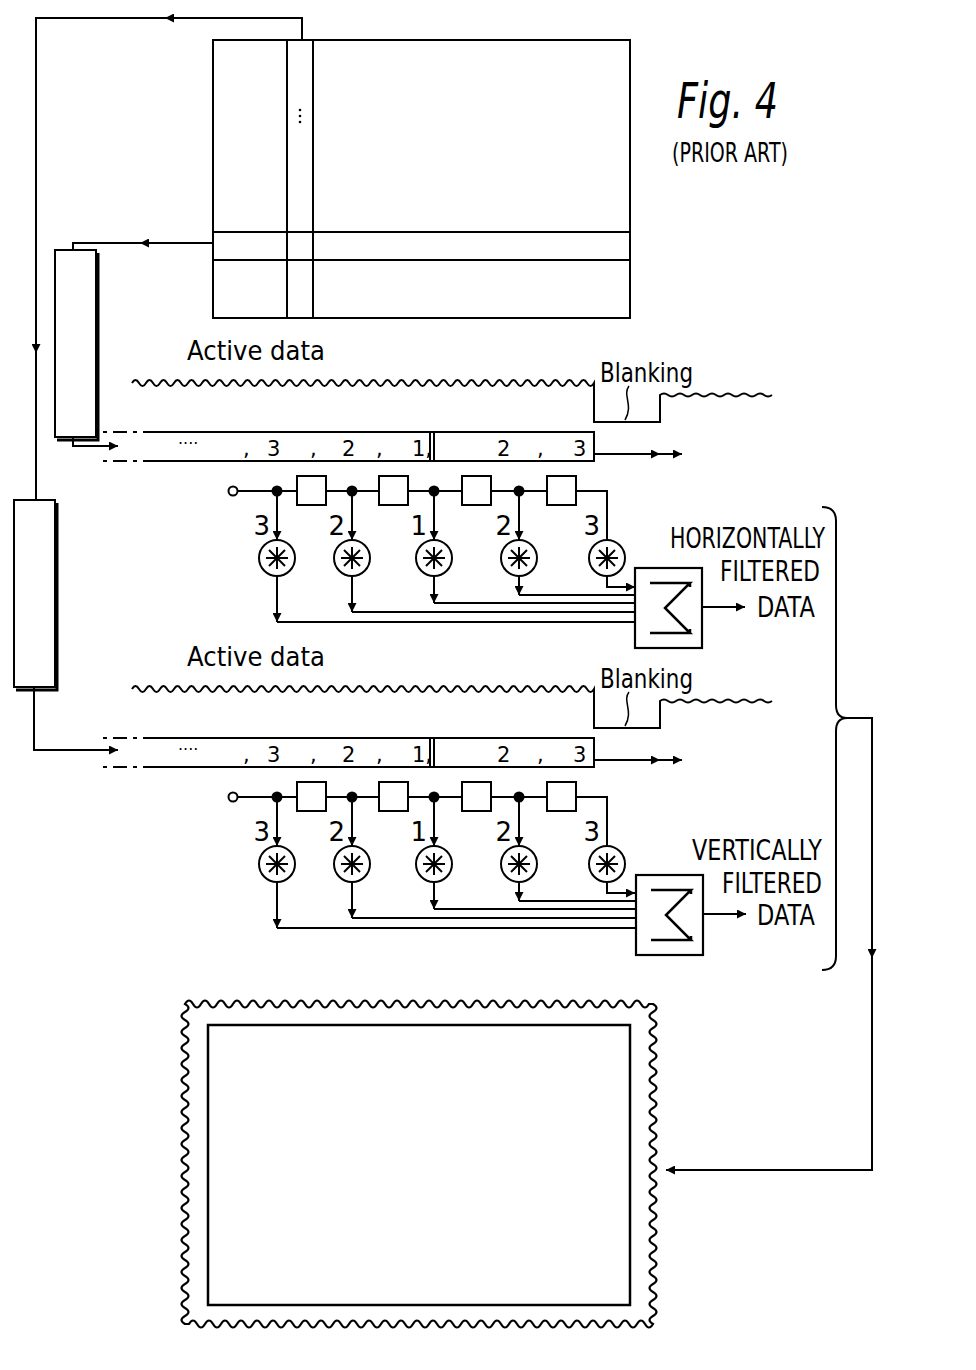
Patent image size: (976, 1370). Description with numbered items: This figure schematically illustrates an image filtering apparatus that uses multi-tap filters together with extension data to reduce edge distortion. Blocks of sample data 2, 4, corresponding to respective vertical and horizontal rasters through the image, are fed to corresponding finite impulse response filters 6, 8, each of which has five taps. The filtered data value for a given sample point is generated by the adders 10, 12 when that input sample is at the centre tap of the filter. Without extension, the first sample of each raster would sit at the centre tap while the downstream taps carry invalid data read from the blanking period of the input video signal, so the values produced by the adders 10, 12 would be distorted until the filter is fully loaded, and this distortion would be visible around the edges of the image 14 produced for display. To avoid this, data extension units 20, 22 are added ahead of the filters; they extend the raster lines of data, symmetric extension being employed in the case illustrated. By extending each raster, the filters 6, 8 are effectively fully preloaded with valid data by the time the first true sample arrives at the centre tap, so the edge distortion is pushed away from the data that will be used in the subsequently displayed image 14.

The block of sample data 2 is at (313, 153).
The block of sample data 4 is at (392, 232).
The finite impulse response filter 6 is at (621, 506).
The finite impulse response filter 8 is at (621, 812).
The adder 10 is at (657, 568).
The adder 12 is at (665, 875).
The image 14 is at (630, 1073).
The data extension unit 20 is at (55, 612).
The data extension unit 22 is at (96, 332).